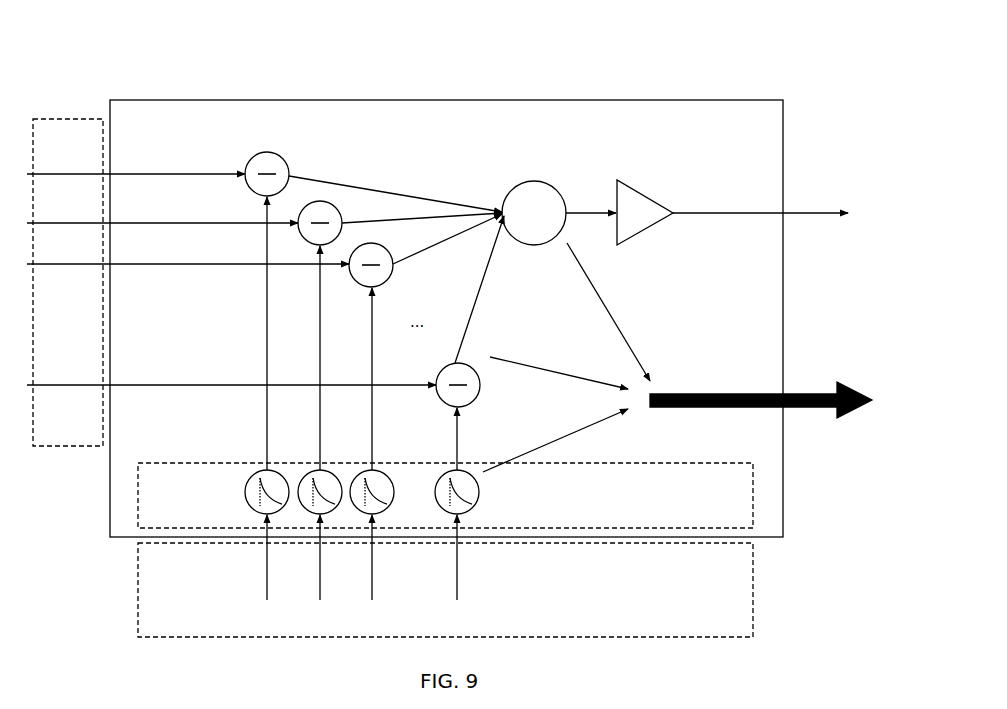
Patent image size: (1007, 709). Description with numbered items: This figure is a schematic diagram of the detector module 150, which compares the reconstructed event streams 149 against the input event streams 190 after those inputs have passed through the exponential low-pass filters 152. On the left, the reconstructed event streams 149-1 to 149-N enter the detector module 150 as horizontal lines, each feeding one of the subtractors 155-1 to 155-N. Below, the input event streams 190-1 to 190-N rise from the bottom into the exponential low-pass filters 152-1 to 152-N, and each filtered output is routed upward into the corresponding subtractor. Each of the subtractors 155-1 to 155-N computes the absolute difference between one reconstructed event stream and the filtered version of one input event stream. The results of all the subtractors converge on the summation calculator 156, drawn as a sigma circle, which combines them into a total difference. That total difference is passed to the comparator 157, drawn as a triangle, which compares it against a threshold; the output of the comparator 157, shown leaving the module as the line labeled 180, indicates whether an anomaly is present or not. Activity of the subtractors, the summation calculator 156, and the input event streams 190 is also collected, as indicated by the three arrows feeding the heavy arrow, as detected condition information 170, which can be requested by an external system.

The reconstructed event streams 149 is at (87, 119).
The reconstructed event stream 149-1 is at (78, 178).
The reconstructed event stream 149-N is at (92, 388).
The detector module 150 is at (420, 100).
The exponential low-pass filters 152 is at (693, 463).
The exponential low-pass filter 152-1 is at (245, 490).
The exponential low-pass filter 152-N is at (480, 492).
The subtractor 155-1 is at (251, 159).
The subtractor 155-N is at (478, 402).
The summation calculator 156 is at (513, 192).
The comparator 157 is at (643, 195).
The detected condition information 170 is at (812, 408).
The detection output 180 is at (822, 212).
The input event streams 190 is at (753, 601).
The input event stream 190-1 is at (266, 560).
The input event stream 190-N is at (458, 578).